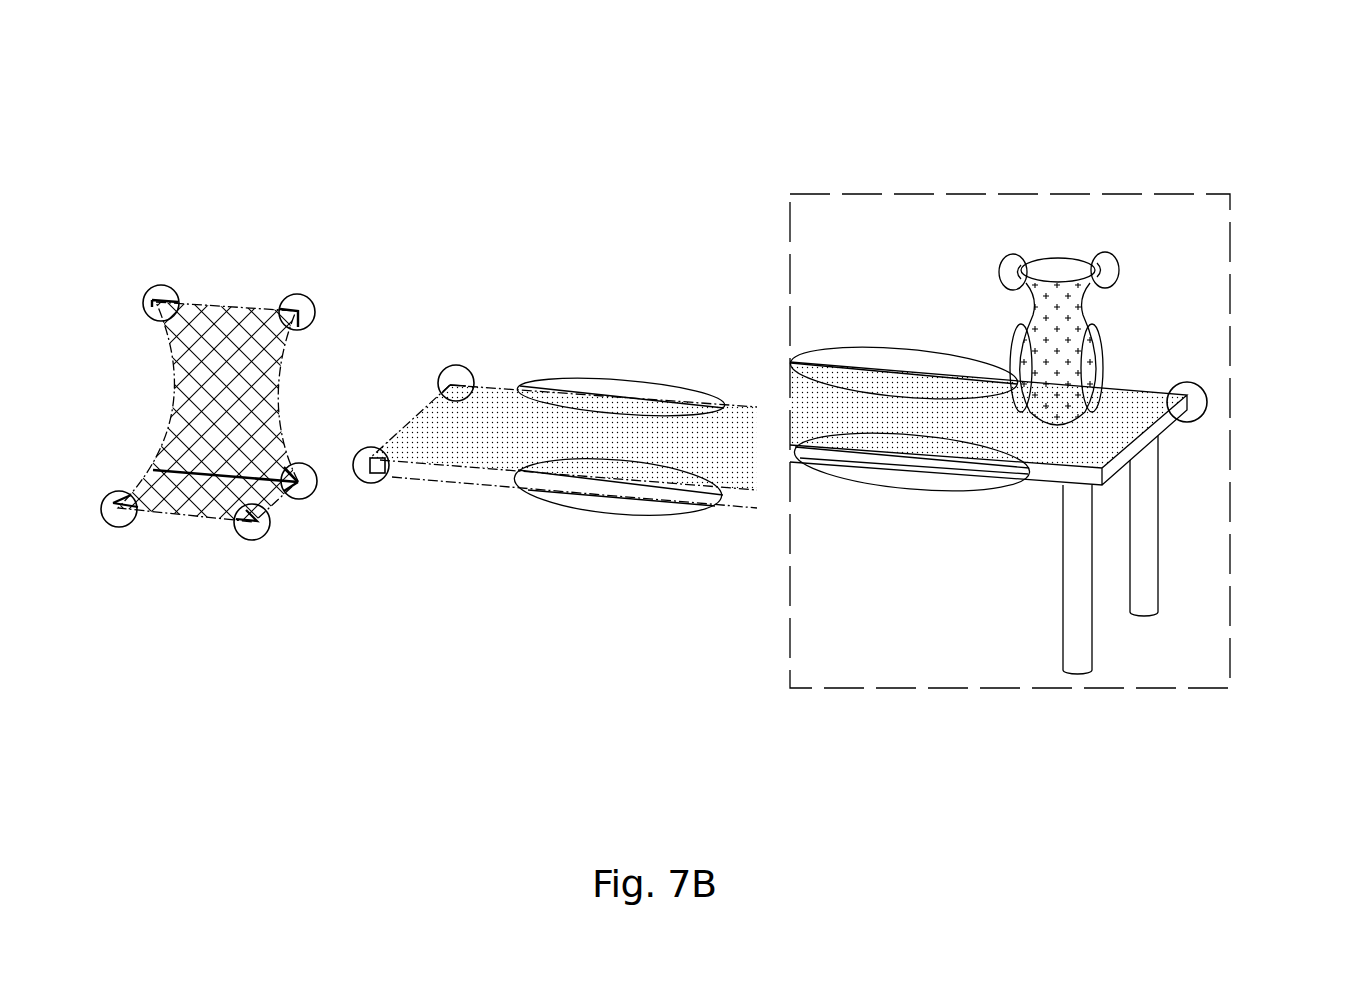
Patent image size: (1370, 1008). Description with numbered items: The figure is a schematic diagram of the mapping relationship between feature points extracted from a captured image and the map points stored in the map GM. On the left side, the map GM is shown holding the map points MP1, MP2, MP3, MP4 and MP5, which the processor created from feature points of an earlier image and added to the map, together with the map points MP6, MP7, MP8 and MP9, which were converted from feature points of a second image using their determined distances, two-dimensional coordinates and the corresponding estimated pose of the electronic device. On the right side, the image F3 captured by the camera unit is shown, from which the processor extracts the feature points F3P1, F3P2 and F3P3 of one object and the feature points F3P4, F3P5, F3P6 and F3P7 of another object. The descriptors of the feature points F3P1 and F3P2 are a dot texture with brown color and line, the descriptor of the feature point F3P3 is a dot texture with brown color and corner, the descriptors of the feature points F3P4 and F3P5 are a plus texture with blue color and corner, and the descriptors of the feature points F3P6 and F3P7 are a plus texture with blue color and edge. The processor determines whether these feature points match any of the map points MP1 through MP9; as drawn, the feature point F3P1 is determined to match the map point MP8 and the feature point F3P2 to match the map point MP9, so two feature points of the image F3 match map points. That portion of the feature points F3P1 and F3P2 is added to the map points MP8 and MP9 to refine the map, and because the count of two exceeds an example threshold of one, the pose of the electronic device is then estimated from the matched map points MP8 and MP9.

The map GM is at (124, 43).
The map point MP1 is at (297, 294).
The map point MP2 is at (160, 284).
The map point MP3 is at (117, 527).
The map point MP4 is at (250, 540).
The map point MP5 is at (302, 500).
The map point MP6 is at (458, 365).
The map point MP7 is at (370, 447).
The map point MP8 is at (627, 380).
The map point MP9 is at (618, 514).
The image F3 is at (823, 194).
The feature point F3P1 is at (848, 350).
The feature point F3P2 is at (910, 490).
The feature point F3P3 is at (1207, 392).
The feature point F3P4 is at (1103, 252).
The feature point F3P5 is at (1008, 254).
The feature point F3P6 is at (1104, 345).
The feature point F3P7 is at (1010, 338).